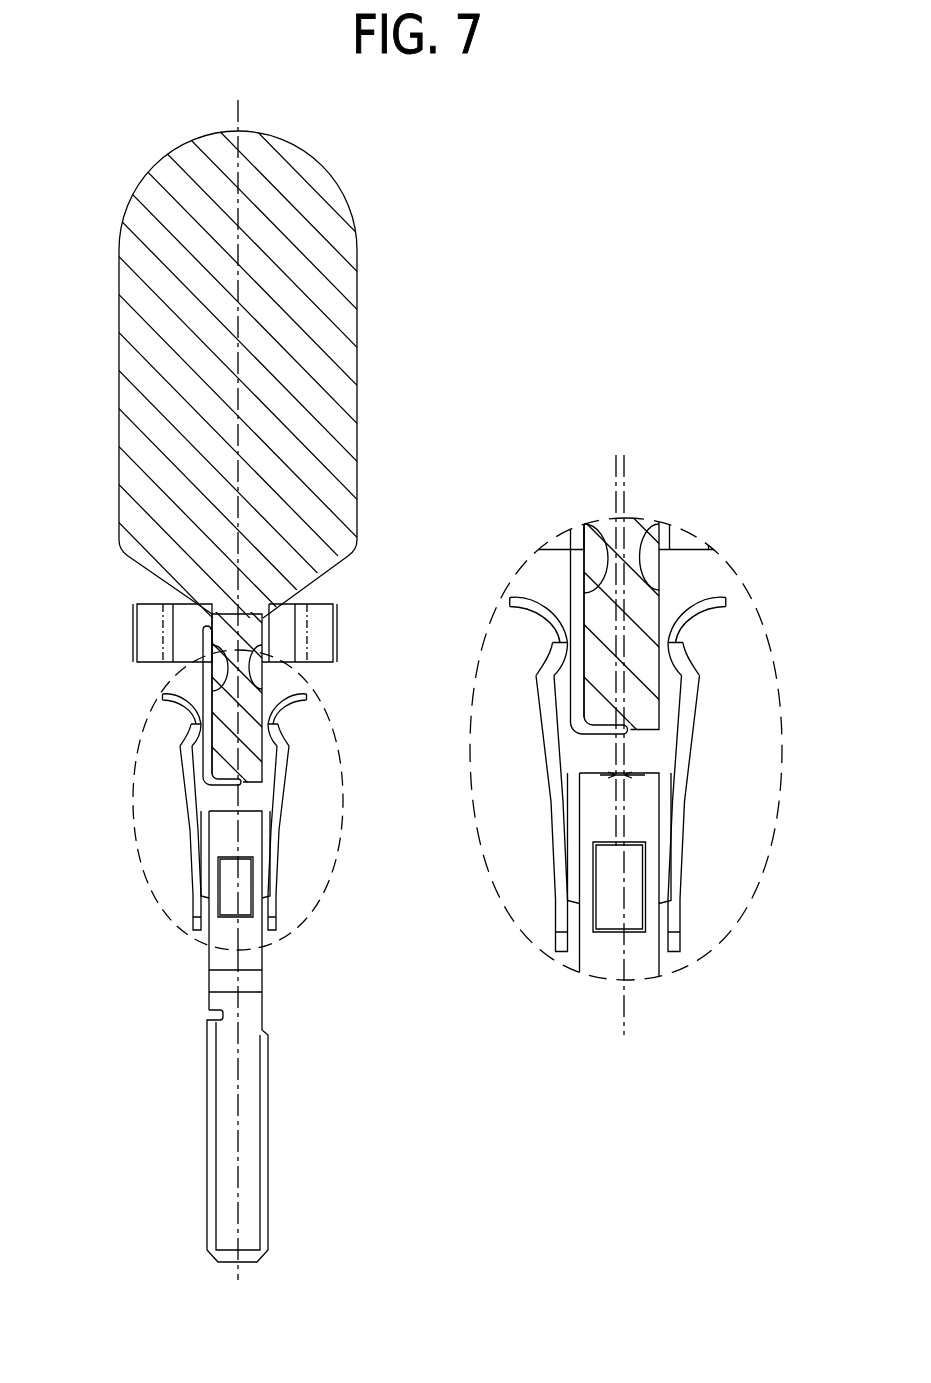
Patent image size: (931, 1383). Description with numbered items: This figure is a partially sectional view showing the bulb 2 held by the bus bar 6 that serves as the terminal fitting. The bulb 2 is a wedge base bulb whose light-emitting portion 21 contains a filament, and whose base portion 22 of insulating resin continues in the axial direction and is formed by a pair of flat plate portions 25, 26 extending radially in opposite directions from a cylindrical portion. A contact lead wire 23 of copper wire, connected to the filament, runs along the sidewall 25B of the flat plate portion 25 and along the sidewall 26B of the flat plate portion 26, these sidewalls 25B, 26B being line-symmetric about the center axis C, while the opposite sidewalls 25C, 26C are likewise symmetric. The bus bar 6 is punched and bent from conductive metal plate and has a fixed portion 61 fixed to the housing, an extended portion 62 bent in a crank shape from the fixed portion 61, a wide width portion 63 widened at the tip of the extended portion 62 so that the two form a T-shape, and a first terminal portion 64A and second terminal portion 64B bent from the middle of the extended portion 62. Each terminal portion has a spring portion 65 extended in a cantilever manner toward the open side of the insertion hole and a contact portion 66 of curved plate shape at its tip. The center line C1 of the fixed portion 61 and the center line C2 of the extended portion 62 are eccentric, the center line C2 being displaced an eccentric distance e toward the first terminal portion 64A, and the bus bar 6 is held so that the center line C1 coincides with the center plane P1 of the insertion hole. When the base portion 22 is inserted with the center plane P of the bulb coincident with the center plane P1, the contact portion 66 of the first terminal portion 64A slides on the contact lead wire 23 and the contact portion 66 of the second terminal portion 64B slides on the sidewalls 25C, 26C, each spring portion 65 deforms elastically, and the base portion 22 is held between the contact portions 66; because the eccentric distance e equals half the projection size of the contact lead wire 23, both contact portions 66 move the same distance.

The bulb 2 is at (269, 394).
The light-emitting portion 21 is at (357, 288).
The base portion 22 is at (473, 705).
The contact lead wire 23 is at (202, 640).
The flat plate portion 25 is at (316, 705).
The flat plate portion 26 is at (255, 736).
The sidewall 25B is at (410, 585).
The sidewall 26B is at (563, 552).
The sidewall 25C is at (517, 588).
The sidewall 26C is at (672, 568).
The bus bar 6 is at (173, 1006).
The fixed portion 61 is at (220, 1106).
The extended portion 62 is at (250, 835).
The wide width portion 63 is at (338, 630).
The first terminal portion 64A is at (188, 793).
The second terminal portion 64B is at (287, 797).
The spring portion 65 is at (560, 818).
The contact portion 66 is at (552, 670).
The center axis C is at (483, 525).
The center plane P is at (240, 118).
The center line C1 is at (512, 867).
The center plane P1 is at (238, 1233).
The center line C2 is at (615, 470).
The eccentric distance e is at (624, 765).